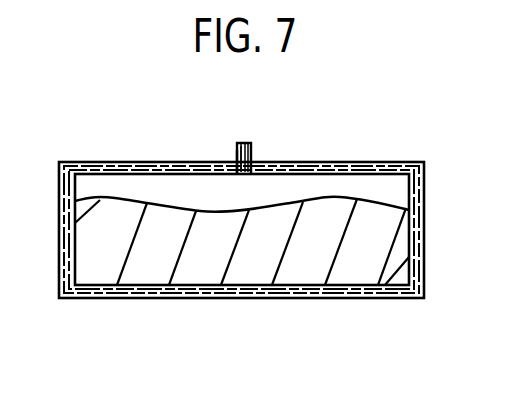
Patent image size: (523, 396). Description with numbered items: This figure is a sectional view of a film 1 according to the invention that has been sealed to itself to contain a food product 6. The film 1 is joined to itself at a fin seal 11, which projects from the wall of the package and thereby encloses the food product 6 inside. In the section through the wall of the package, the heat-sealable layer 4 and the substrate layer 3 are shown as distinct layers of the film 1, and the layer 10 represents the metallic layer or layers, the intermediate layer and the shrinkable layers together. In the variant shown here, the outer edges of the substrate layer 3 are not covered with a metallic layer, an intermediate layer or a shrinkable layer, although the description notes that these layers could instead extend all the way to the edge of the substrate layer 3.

The film 1 is at (406, 153).
The layer 10 is at (300, 152).
The fin seal 11 is at (251, 146).
The substrate layer 3 is at (237, 157).
The heat-sealable layer 4 is at (238, 150).
The food product 6 is at (150, 272).